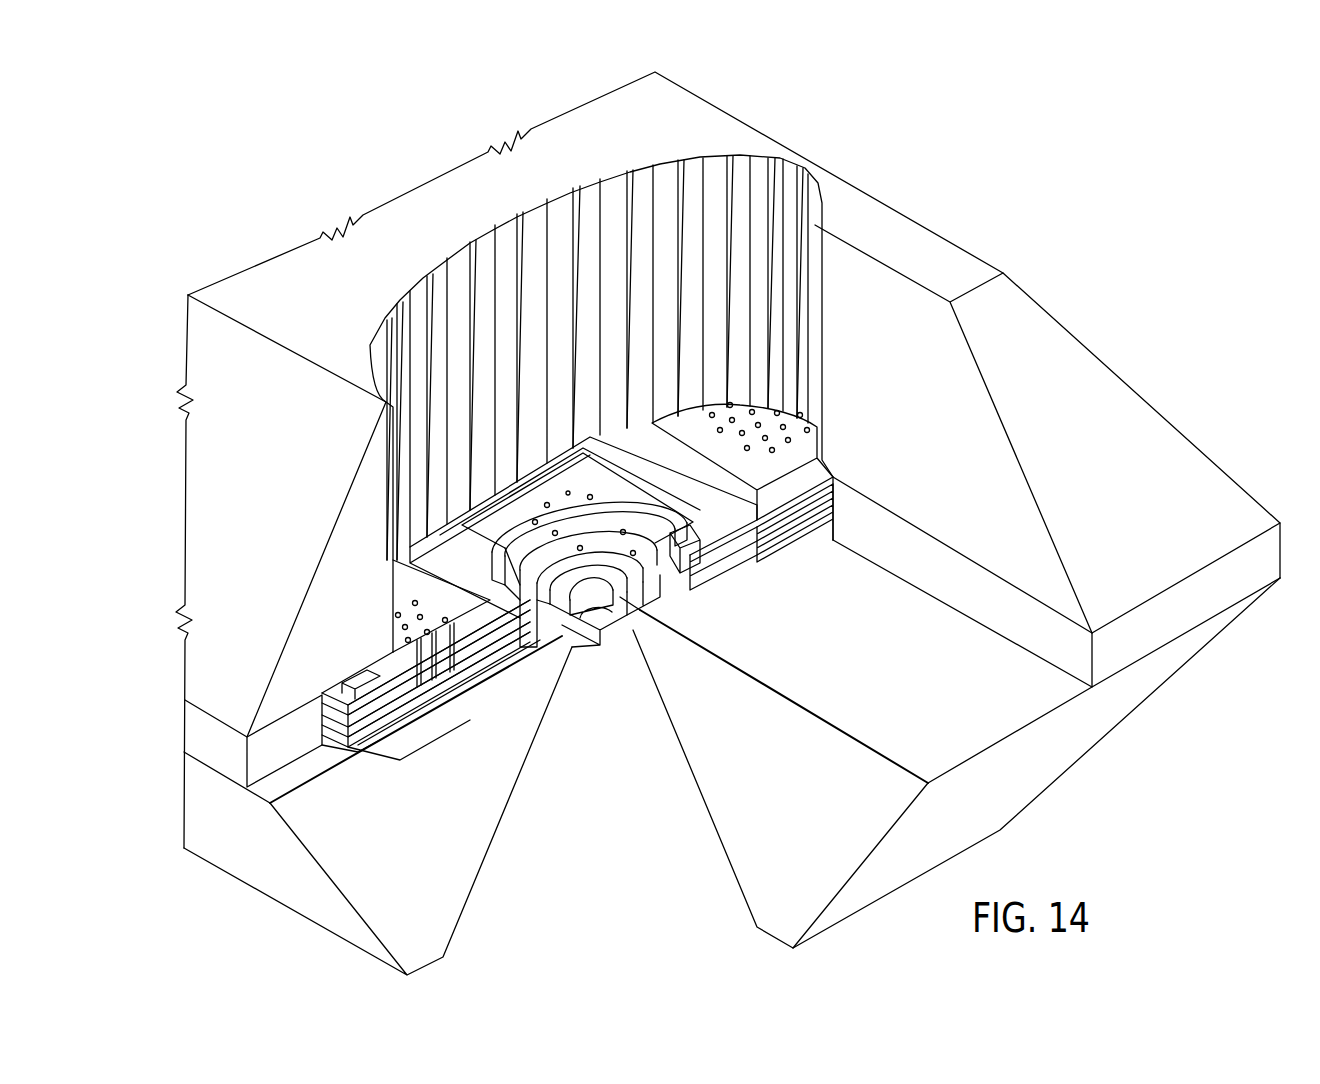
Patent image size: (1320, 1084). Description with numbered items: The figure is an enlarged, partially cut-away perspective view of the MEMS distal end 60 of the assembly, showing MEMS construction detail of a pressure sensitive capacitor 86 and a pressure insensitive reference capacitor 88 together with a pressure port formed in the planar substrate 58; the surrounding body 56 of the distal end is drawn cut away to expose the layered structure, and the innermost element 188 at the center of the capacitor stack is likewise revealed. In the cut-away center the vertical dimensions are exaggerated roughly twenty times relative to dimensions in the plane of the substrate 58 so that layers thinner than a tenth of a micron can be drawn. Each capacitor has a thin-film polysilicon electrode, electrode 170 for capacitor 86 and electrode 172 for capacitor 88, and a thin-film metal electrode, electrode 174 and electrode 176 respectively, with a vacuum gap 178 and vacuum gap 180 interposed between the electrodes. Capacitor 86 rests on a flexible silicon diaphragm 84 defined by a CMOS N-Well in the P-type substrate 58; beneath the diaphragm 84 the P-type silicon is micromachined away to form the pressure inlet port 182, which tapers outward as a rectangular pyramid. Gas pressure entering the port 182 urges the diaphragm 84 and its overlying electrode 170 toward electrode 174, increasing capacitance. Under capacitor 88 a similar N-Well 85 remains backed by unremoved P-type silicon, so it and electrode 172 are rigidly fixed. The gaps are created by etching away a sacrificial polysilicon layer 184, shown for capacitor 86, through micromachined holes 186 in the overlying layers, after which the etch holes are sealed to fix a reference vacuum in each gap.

The housing block 56 is at (1108, 386).
The substrate 58 is at (1056, 748).
The MEMS distal end 60 is at (1155, 722).
The diaphragm 84 is at (603, 640).
The N-Well 85 is at (410, 736).
The pressure sensitive capacitor 86 is at (773, 592).
The pressure insensitive capacitor 88 is at (405, 782).
The electrode 170 is at (643, 617).
The electrode 172 is at (420, 728).
The electrode 174 is at (683, 590).
The electrode 176 is at (472, 652).
The vacuum gap 178 is at (628, 633).
The vacuum gap 180 is at (437, 692).
The pressure inlet port 182 is at (658, 862).
The sacrificial polysilicon layer 184 is at (536, 642).
The micromachined holes 186 is at (577, 484).
The central hub 188 is at (573, 657).